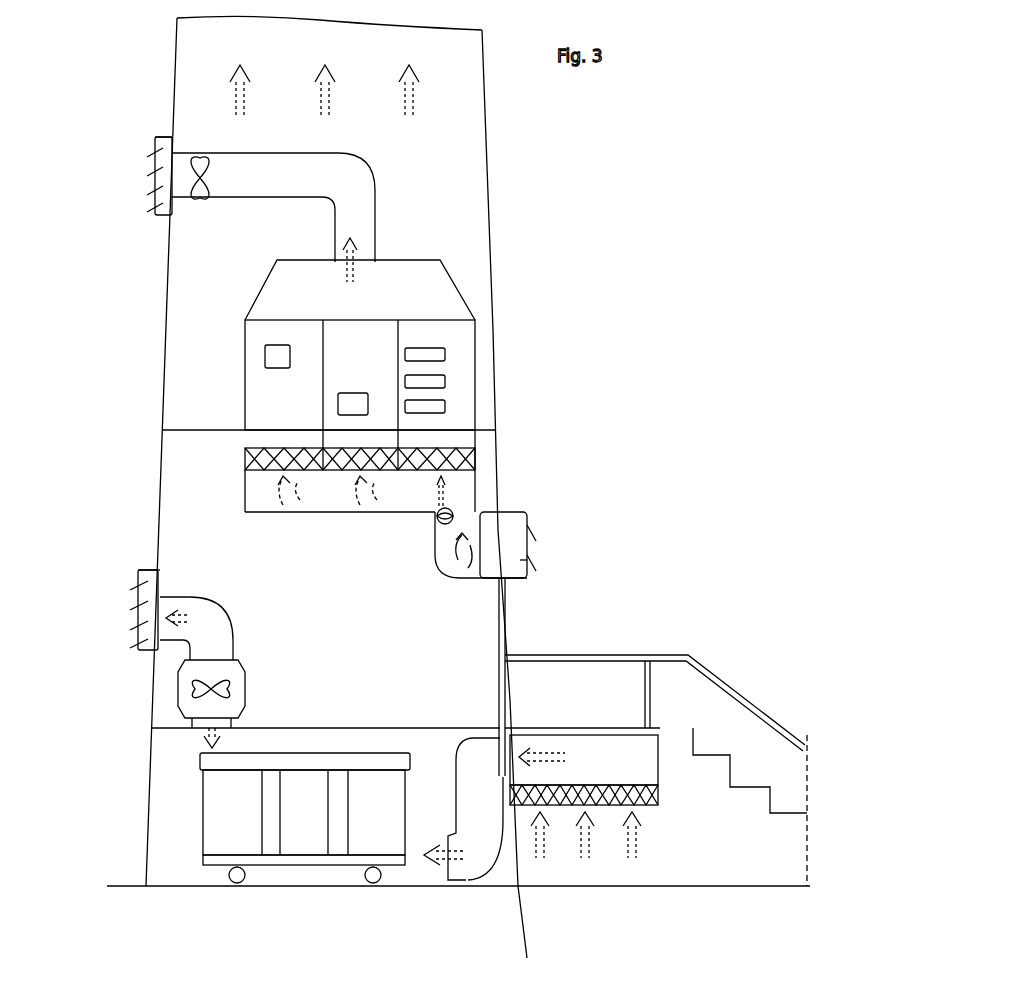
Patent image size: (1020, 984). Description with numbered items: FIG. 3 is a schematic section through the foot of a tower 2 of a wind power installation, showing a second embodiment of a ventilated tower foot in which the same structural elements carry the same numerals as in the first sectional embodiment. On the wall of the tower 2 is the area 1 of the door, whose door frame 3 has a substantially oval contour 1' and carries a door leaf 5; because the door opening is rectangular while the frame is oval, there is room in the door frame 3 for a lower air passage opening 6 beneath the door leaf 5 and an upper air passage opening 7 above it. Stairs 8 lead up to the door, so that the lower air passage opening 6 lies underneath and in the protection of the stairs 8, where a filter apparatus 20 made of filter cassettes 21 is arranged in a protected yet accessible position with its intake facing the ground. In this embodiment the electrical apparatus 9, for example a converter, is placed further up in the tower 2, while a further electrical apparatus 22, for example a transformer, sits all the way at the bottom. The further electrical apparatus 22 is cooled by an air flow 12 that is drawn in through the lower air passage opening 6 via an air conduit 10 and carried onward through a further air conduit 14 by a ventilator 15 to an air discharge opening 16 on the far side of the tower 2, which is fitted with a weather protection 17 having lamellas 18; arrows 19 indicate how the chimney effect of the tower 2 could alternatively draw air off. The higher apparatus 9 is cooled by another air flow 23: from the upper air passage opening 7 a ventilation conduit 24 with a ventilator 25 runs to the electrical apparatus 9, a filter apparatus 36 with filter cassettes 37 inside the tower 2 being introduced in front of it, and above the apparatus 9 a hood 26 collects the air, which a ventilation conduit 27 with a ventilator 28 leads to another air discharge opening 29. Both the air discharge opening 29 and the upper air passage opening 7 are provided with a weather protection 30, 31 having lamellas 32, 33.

The area of the door 1 is at (458, 487).
The oval contour 1' is at (495, 908).
The tower 2 is at (500, 348).
The door frame 3 is at (528, 578).
The door leaf 5 is at (506, 622).
The air passage opening 6 is at (548, 758).
The air passage opening 7 is at (528, 562).
The stairs 8 is at (708, 755).
The electrical apparatus 9 is at (452, 345).
The air conduit 10 is at (480, 850).
The air flow 12 is at (210, 738).
The further air conduit 14 is at (188, 650).
The ventilator 15 is at (190, 695).
The air discharge opening 16 is at (138, 586).
The weather protection 17 is at (148, 571).
The lamellas 18 is at (138, 626).
The arrows 19 is at (412, 95).
The filter apparatus 20 is at (657, 782).
The filter cassettes 21 is at (651, 660).
The further electrical apparatus 22 is at (305, 838).
The air flow 23 is at (382, 258).
The ventilation conduit 24 is at (258, 488).
The ventilator 25 is at (453, 511).
The hood 26 is at (432, 282).
The ventilation conduit 27 is at (287, 187).
The ventilator 28 is at (197, 193).
The air discharge opening 29 is at (150, 156).
The weather protection 30 is at (160, 137).
The weather protection 31 is at (527, 535).
The lamellas 32 is at (150, 191).
The lamellas 33 is at (533, 551).
The filter apparatus 36 is at (466, 470).
The filter cassettes 37 is at (450, 447).